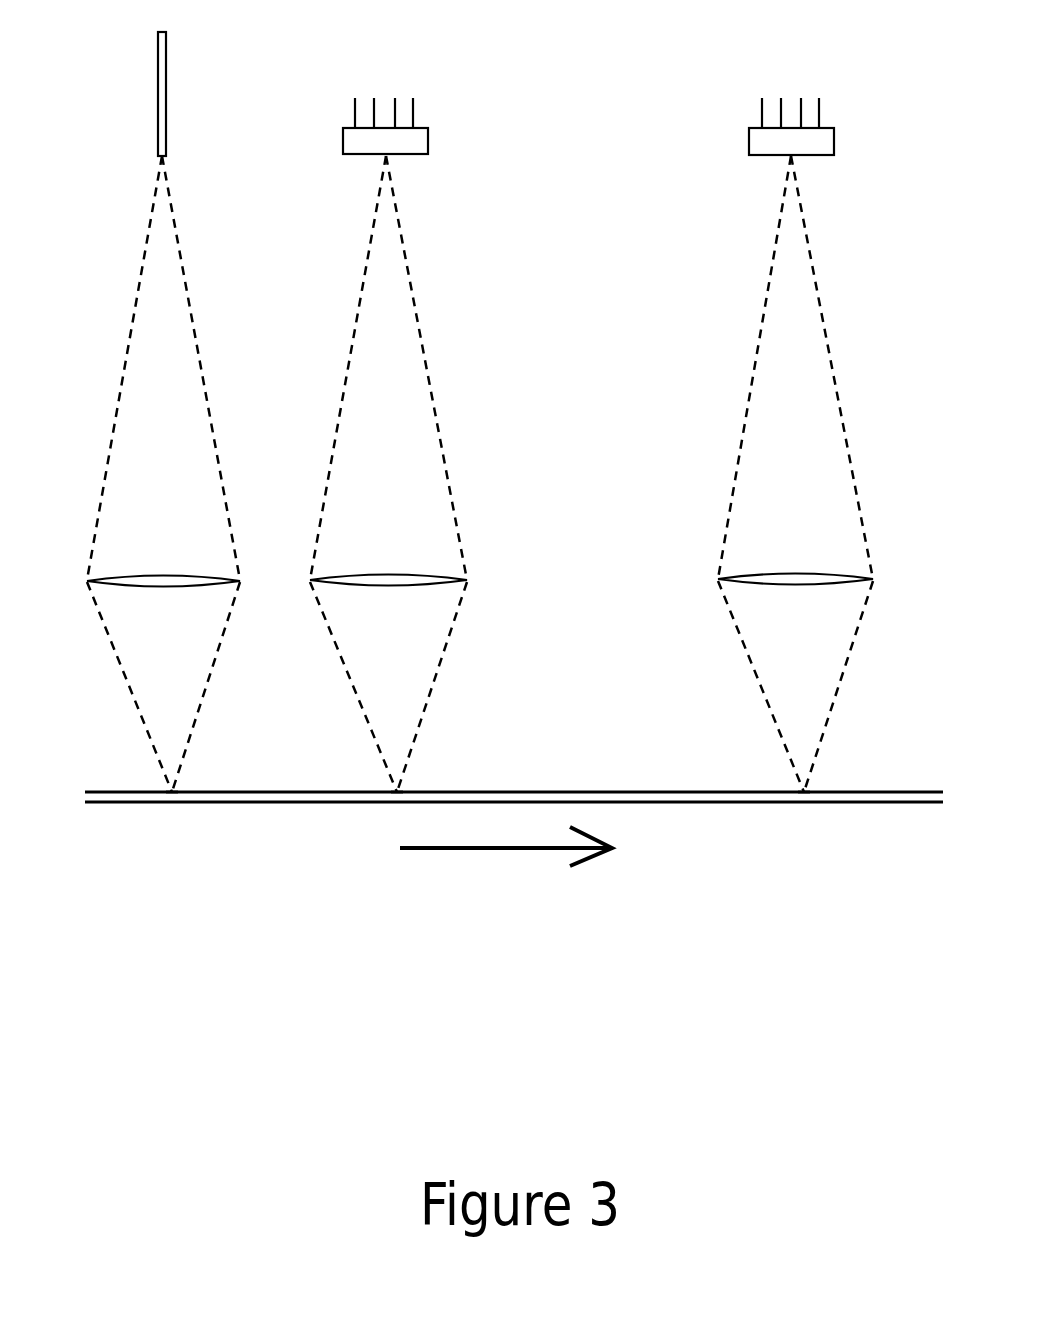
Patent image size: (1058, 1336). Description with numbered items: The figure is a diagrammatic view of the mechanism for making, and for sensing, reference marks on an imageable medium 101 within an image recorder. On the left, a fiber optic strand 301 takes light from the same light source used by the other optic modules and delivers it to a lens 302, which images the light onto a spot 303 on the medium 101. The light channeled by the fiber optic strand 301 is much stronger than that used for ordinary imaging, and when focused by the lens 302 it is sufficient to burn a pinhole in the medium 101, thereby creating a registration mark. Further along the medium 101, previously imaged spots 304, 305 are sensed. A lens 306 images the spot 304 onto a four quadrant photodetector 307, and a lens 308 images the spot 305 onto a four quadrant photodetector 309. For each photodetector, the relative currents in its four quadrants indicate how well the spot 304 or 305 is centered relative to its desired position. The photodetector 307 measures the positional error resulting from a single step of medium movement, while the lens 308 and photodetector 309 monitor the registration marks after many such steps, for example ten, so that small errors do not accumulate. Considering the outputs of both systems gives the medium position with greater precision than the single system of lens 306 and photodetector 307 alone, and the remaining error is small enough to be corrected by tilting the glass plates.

The medium 101 is at (601, 792).
The fiber optic strand 301 is at (167, 88).
The lens 302 is at (240, 580).
The spot 303 is at (172, 794).
The spot 304 is at (397, 794).
The spot 305 is at (804, 794).
The lens 306 is at (467, 580).
The four quadrant photodetector 307 is at (428, 128).
The lens 308 is at (873, 579).
The four quadrant photodetector 309 is at (834, 128).